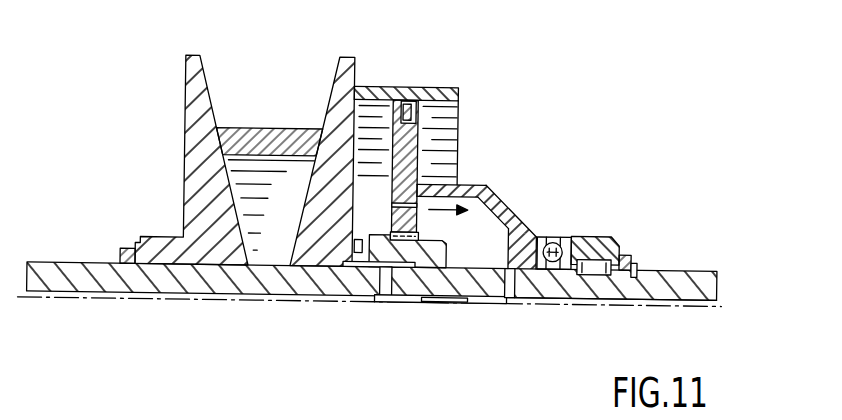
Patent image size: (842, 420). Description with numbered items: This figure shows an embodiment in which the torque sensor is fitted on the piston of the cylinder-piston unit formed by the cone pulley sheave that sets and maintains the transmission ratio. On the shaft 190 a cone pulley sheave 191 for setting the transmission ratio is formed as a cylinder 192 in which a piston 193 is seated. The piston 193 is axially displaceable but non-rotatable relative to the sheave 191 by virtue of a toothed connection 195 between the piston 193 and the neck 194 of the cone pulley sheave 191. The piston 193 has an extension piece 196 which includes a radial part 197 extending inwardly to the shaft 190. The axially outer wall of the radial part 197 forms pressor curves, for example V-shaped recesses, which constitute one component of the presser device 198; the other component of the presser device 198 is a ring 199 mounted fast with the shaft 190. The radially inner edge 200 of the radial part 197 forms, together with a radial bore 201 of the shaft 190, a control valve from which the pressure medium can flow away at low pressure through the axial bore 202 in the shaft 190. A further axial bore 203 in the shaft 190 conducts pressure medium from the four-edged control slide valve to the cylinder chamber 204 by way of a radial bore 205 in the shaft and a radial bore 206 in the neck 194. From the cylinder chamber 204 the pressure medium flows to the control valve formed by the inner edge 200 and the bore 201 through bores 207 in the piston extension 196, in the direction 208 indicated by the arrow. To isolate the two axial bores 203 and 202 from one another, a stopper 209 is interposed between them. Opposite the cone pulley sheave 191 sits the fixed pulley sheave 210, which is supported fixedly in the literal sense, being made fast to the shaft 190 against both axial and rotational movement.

The shaft 190 is at (143, 280).
The cone pulley sheave 191 is at (343, 72).
The cylinder 192 is at (392, 92).
The piston 193 is at (413, 102).
The neck 194 is at (380, 252).
The toothed connection 195 is at (402, 247).
The extension piece 196 is at (505, 204).
The radial part 197 is at (524, 240).
The presser device 198 is at (563, 237).
The ring 199 is at (612, 242).
The radially inner edge 200 is at (542, 274).
The radial bore 201 is at (510, 288).
The axial bore 202 is at (664, 305).
The further axial bore 203 is at (207, 296).
The cylinder chamber 204 is at (362, 134).
The radial bore 205 is at (387, 292).
The radial bore 206 is at (357, 250).
The bores 207 is at (415, 182).
The direction 208 is at (480, 194).
The stopper 209 is at (443, 299).
The fixed pulley sheave 210 is at (194, 58).